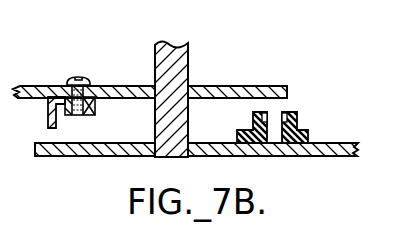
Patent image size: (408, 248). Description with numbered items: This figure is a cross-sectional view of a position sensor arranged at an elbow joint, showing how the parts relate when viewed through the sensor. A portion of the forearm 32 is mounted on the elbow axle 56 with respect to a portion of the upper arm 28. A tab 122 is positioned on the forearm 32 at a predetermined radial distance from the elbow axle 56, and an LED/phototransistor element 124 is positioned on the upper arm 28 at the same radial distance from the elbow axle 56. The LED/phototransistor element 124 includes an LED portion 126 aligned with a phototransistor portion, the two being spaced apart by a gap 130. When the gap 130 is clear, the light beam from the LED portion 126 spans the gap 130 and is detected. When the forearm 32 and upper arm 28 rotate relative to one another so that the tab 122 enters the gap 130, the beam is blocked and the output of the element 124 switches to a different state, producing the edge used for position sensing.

The upper arm 28 is at (107, 156).
The forearm 32 is at (130, 85).
The elbow axle 56 is at (183, 65).
The tab 122 is at (47, 112).
The LED/phototransistor element 124 is at (245, 133).
The LED portion 126 is at (259, 114).
The gap 130 is at (275, 121).